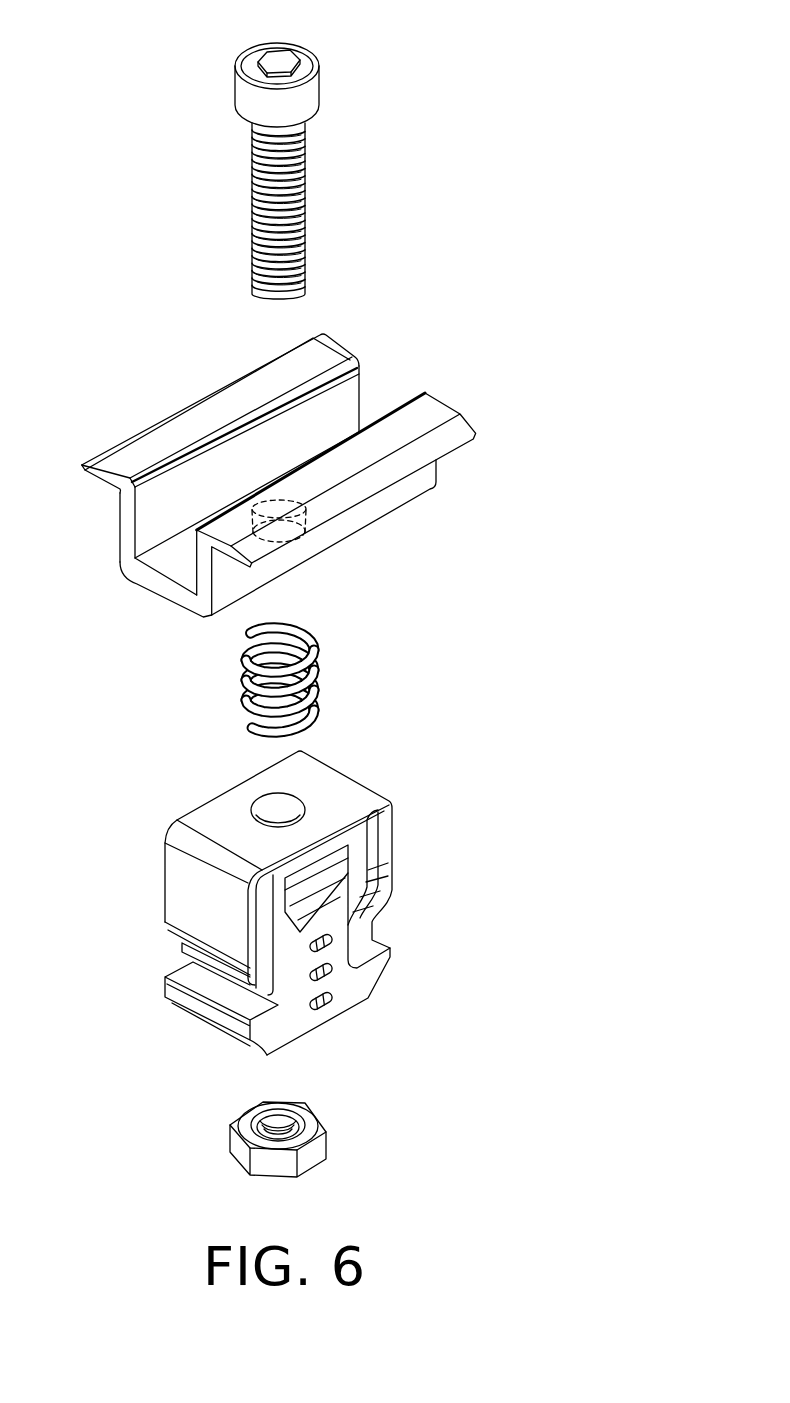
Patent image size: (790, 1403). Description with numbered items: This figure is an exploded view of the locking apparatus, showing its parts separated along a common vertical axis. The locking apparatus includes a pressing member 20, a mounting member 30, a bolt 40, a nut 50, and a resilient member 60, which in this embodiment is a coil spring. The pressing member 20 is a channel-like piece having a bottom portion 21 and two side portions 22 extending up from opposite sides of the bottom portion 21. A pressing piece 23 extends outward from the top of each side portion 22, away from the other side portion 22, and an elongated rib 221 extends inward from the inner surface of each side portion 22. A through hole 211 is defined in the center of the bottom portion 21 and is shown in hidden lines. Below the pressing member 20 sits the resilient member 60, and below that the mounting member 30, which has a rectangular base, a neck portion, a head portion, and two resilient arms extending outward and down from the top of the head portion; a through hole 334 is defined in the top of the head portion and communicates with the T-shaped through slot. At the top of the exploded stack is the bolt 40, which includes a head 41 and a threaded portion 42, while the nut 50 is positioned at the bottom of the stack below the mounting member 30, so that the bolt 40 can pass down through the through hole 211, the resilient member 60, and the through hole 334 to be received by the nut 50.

The pressing member 20 is at (250, 483).
The bottom portion 21 is at (247, 535).
The through hole 211 is at (293, 542).
The side portions 22 is at (143, 527).
The elongated rib 221 is at (343, 345).
The pressing piece 23 is at (140, 453).
The mounting member 30 is at (261, 896).
The through hole 334 is at (288, 806).
The bolt 40 is at (261, 171).
The head 41 is at (312, 104).
The threaded portion 42 is at (290, 212).
The nut 50 is at (247, 1118).
The resilient member 60 is at (312, 645).